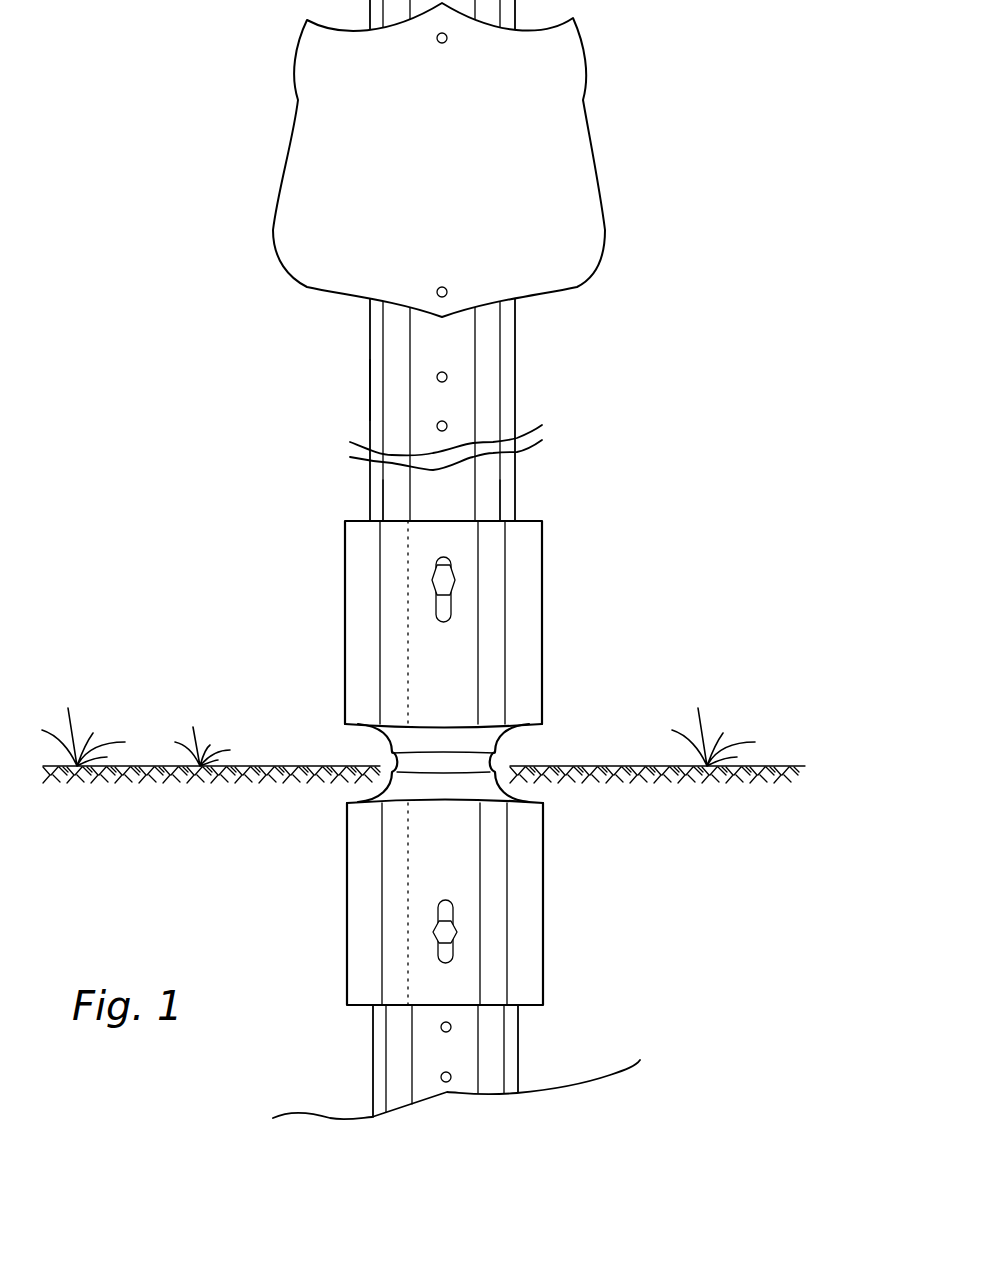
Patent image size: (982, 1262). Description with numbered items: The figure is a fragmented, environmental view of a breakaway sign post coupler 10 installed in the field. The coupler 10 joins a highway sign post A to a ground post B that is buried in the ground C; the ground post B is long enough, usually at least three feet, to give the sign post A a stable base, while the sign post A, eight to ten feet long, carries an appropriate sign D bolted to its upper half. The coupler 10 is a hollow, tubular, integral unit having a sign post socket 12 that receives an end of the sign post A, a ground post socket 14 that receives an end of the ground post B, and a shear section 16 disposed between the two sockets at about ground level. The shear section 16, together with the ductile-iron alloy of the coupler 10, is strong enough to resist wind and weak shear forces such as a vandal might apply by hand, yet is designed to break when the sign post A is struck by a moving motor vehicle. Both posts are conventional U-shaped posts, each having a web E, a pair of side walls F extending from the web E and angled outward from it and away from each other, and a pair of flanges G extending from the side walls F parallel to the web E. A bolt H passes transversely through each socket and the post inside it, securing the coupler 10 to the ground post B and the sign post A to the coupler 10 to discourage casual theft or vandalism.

The breakaway sign post coupler 10 is at (630, 538).
The sign post socket 12 is at (544, 556).
The ground post socket 14 is at (545, 912).
The shear section 16 is at (497, 763).
The sign post A is at (517, 386).
The ground post B is at (372, 1082).
The ground C is at (290, 765).
The sign D is at (598, 190).
The web E is at (477, 502).
The side walls F is at (383, 502).
The flanges G is at (368, 390).
The bolt H is at (432, 583).